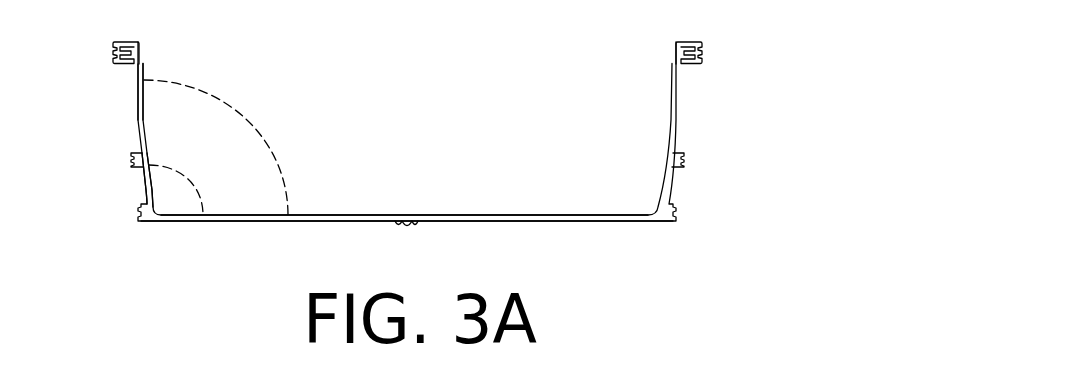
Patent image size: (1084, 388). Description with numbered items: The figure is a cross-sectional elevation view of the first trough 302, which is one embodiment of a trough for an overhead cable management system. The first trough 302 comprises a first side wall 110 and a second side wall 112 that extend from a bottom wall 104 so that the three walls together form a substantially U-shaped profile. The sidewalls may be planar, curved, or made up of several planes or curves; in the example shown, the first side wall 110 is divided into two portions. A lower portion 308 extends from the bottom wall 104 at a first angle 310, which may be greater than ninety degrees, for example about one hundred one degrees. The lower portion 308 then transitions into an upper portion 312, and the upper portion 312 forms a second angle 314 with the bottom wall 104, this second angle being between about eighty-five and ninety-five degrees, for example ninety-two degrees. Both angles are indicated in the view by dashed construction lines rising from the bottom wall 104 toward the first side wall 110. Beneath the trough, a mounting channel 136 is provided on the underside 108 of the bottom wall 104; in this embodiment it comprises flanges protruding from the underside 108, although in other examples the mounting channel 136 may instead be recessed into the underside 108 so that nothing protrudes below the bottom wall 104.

The first trough 302 is at (755, 168).
The first side wall 110 is at (142, 63).
The second side wall 112 is at (673, 63).
The upper portion 312 is at (140, 90).
The lower portion 308 is at (152, 190).
The bottom wall 104 is at (550, 216).
The underside 108 is at (533, 221).
The first angle 310 is at (187, 178).
The second angle 314 is at (275, 160).
The mounting channel 136 is at (410, 245).